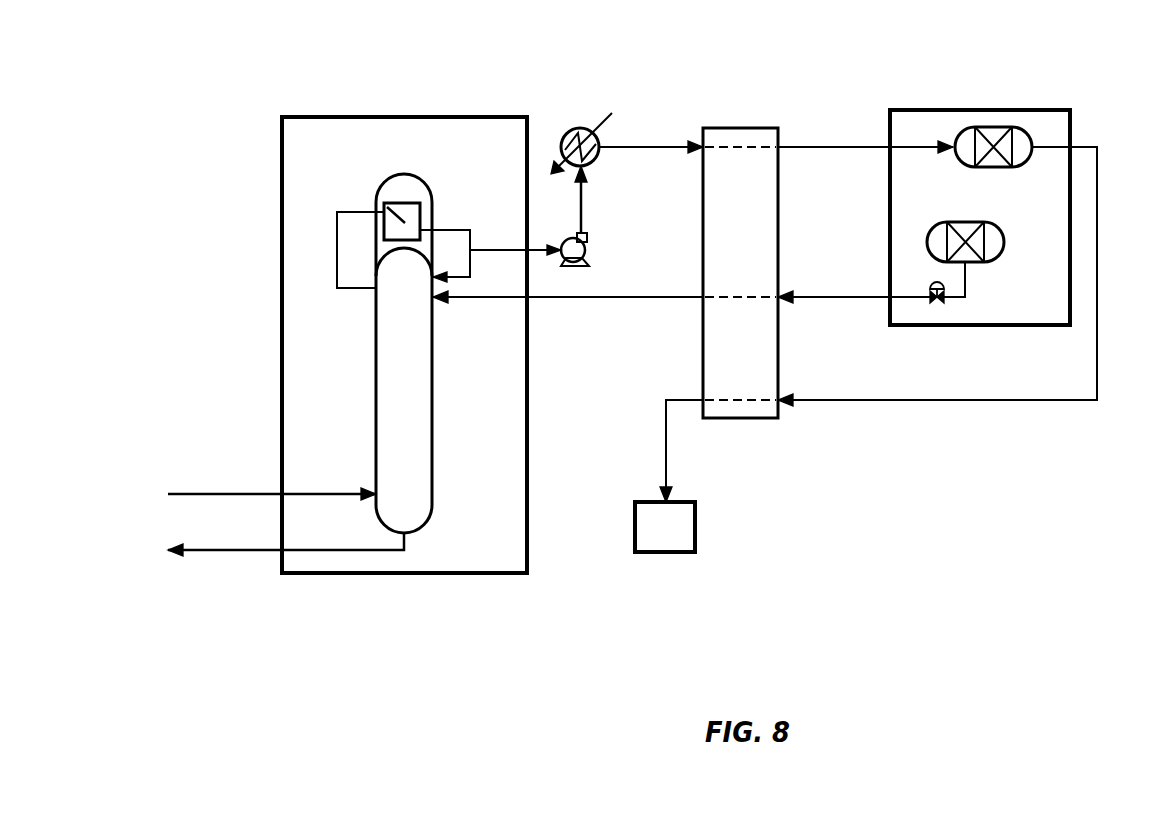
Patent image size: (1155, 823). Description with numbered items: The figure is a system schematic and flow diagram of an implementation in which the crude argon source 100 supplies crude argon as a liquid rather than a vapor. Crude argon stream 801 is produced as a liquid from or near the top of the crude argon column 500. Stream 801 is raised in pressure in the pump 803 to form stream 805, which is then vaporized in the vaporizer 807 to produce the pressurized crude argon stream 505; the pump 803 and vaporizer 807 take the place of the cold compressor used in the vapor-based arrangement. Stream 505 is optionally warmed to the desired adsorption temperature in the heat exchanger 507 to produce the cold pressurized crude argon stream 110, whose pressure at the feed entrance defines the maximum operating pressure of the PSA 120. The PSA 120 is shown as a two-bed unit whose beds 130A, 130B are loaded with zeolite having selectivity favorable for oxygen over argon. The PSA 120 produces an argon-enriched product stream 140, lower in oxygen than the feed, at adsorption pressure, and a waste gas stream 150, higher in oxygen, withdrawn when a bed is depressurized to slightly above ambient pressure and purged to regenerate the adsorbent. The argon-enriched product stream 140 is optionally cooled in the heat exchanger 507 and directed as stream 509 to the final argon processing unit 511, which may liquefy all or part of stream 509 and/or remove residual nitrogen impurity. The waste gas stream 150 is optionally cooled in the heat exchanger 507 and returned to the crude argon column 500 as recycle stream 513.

The crude argon source 100 is at (282, 208).
The crude argon column 500 is at (372, 363).
The crude argon stream 801 is at (505, 220).
The pump 803 is at (587, 250).
The stream 805 is at (583, 196).
The vaporizer 807 is at (592, 128).
The pressurized crude argon stream 505 is at (655, 148).
The heat exchanger 507 is at (733, 128).
The cold pressurized crude argon stream 110 is at (843, 118).
The PSA 120 is at (1003, 110).
The PSA bed 130A is at (1002, 168).
The PSA bed 130B is at (963, 196).
The waste gas stream 150 is at (843, 298).
The argon-enriched product stream 140 is at (1028, 372).
The recycle stream 513 is at (647, 298).
The stream 509 is at (666, 423).
The final argon processing unit 511 is at (695, 528).